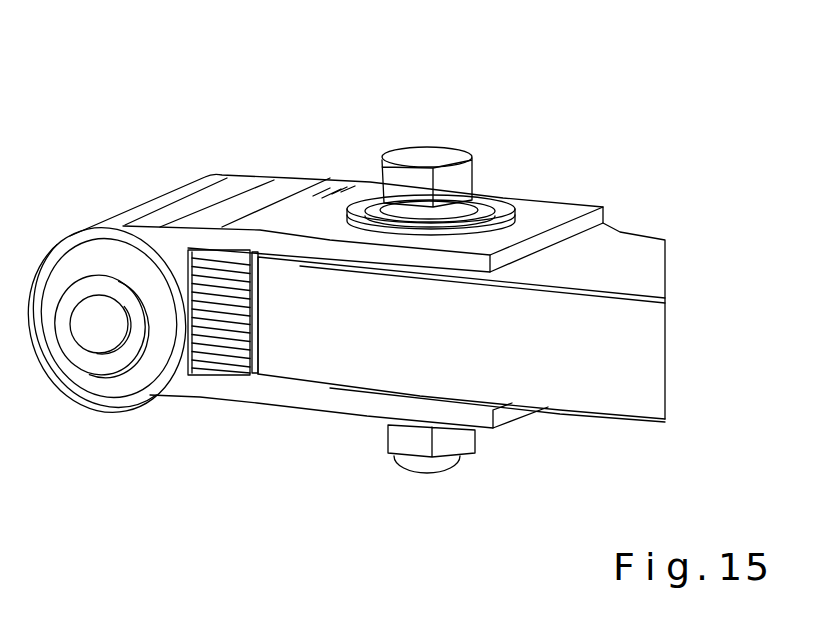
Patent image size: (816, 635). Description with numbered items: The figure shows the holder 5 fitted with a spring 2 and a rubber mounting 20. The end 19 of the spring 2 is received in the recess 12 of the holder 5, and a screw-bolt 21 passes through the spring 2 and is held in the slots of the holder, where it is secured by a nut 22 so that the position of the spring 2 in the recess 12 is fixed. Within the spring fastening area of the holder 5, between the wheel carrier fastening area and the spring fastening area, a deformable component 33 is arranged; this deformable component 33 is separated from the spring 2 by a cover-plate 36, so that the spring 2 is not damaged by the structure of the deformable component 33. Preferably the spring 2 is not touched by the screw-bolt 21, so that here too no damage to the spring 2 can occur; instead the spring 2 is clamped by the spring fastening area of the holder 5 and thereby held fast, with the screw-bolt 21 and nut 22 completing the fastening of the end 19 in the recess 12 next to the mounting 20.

The holder 5 is at (111, 178).
The mounting 20 is at (133, 368).
The deformable component 33 is at (217, 293).
The cover-plate 36 is at (249, 350).
The end of the spring 19 is at (290, 312).
The spring 2 is at (532, 312).
The recess 12 is at (440, 340).
The screw-bolt 21 is at (448, 155).
The nut 22 is at (410, 435).